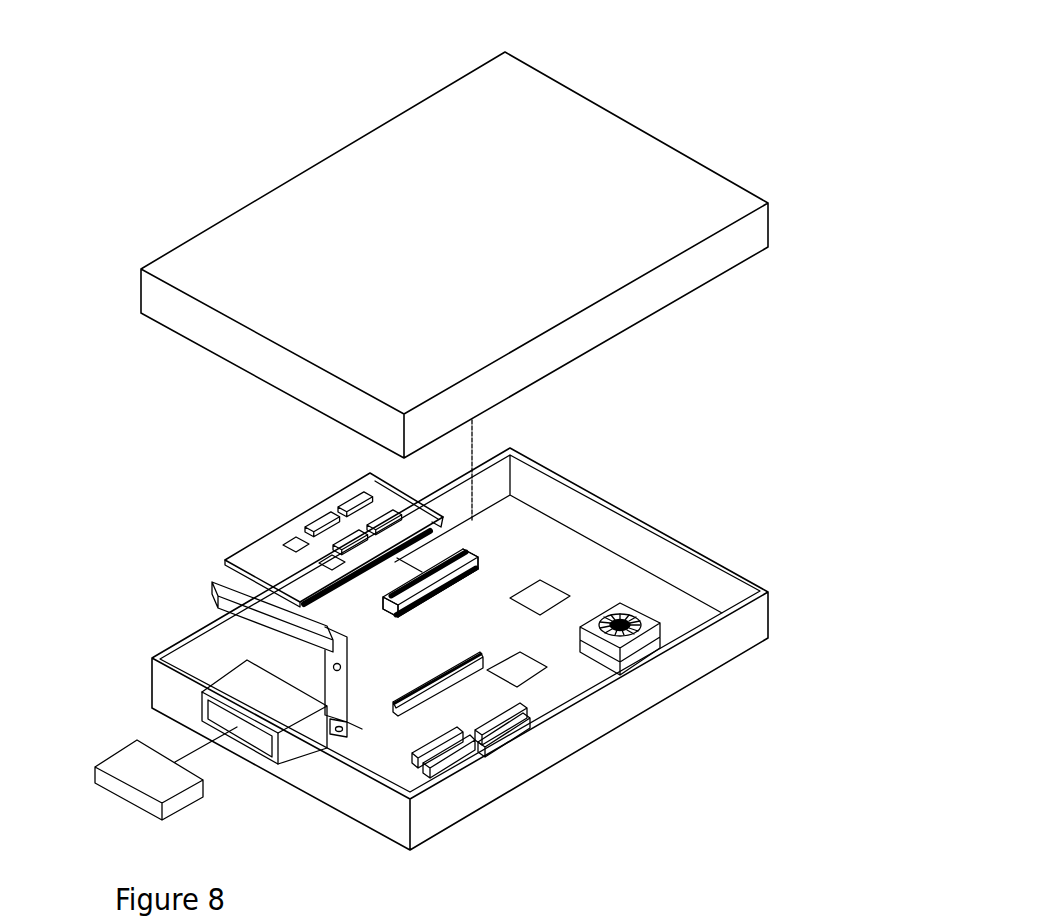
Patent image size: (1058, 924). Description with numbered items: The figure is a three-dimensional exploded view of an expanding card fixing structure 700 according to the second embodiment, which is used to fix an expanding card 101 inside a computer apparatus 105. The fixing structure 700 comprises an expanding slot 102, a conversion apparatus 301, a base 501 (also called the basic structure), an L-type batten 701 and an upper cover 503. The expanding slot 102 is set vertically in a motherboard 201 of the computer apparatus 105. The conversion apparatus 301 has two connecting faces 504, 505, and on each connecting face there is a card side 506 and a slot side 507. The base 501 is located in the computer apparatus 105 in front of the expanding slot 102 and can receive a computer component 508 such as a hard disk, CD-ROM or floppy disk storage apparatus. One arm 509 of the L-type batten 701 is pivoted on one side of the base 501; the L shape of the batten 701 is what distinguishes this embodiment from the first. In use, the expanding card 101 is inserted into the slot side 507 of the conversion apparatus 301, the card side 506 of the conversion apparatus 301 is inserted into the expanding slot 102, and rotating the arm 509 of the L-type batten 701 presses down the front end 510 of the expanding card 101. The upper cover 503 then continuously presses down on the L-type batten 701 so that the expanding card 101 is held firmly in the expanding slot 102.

The expanding card fixing structure 700 is at (716, 41).
The upper cover 503 is at (768, 223).
The computer apparatus 105 is at (638, 522).
The motherboard 201 is at (670, 618).
The conversion apparatus 301 is at (492, 546).
The expanding card 101 is at (292, 515).
The expanding slot 102 is at (433, 688).
The L-type batten 701 is at (263, 603).
The arm 509 is at (347, 662).
The base 501 is at (237, 691).
The computer component 508 is at (120, 760).
The connecting face 504 is at (383, 598).
The slot side 507 is at (438, 593).
The connecting face 505 is at (478, 563).
The card side 506 is at (436, 591).
The front end 510 is at (465, 588).